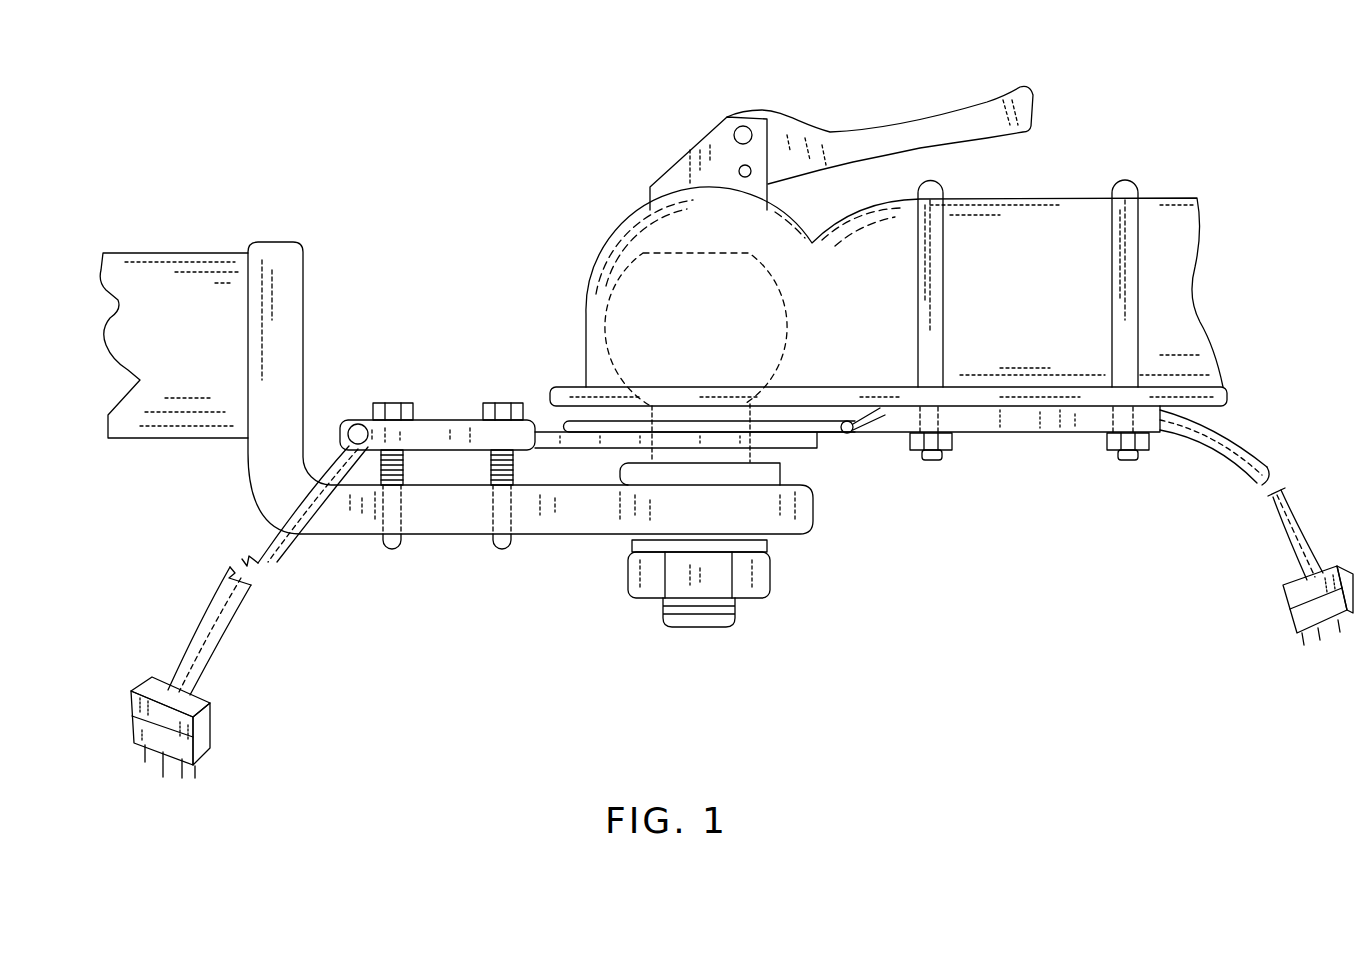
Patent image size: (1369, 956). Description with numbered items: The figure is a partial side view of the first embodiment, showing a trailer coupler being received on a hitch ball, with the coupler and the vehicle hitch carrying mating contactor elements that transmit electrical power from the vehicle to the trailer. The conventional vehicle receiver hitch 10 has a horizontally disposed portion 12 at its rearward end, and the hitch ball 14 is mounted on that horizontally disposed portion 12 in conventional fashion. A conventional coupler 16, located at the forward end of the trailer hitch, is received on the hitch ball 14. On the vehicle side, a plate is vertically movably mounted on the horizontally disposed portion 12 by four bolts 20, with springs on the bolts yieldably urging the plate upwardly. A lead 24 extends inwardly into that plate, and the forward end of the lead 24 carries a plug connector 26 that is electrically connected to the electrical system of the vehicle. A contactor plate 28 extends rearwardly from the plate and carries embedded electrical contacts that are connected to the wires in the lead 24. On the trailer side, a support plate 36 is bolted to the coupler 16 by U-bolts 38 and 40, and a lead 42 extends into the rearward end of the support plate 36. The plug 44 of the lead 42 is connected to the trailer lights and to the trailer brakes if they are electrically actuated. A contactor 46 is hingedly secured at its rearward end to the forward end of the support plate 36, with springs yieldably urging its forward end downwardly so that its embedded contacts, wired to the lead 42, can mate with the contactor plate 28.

The vehicle receiver hitch 10 is at (235, 200).
The horizontally disposed portion 12 is at (535, 510).
The hitch ball 14 is at (757, 455).
The coupler 16 is at (1062, 190).
The bolts 20 is at (397, 402).
The lead 24 is at (277, 543).
The plug connector 26 is at (210, 735).
The contactor plate 28 is at (543, 415).
The support plate 36 is at (1002, 420).
The U-bolt 38 is at (928, 275).
The U-bolt 40 is at (1123, 307).
The lead 42 is at (1210, 467).
The plug 44 is at (1288, 606).
The contactor 46 is at (840, 440).